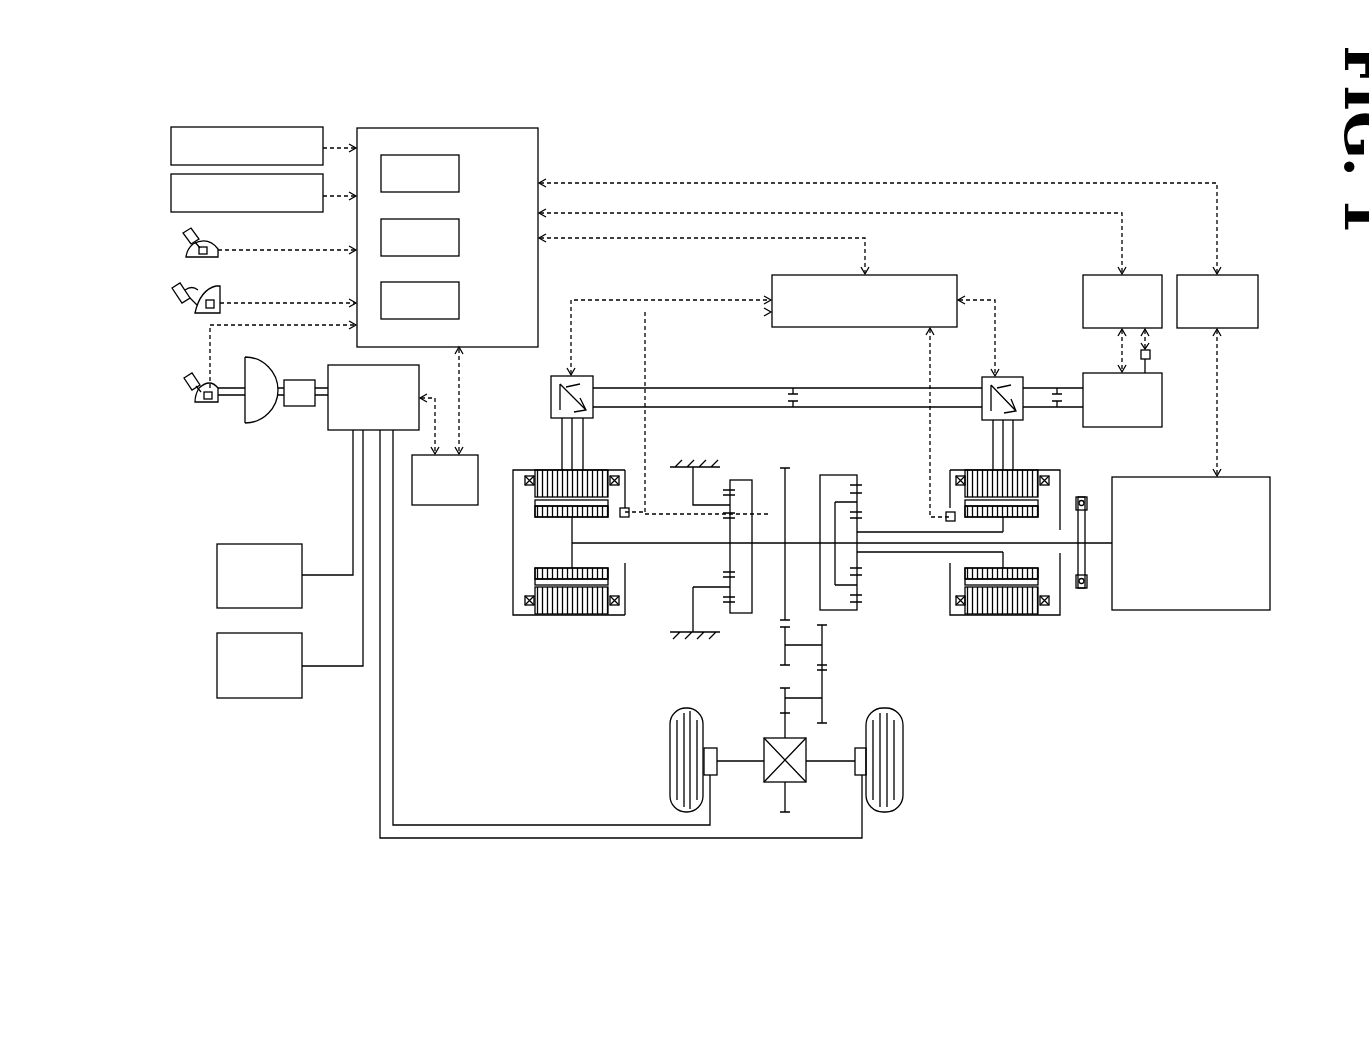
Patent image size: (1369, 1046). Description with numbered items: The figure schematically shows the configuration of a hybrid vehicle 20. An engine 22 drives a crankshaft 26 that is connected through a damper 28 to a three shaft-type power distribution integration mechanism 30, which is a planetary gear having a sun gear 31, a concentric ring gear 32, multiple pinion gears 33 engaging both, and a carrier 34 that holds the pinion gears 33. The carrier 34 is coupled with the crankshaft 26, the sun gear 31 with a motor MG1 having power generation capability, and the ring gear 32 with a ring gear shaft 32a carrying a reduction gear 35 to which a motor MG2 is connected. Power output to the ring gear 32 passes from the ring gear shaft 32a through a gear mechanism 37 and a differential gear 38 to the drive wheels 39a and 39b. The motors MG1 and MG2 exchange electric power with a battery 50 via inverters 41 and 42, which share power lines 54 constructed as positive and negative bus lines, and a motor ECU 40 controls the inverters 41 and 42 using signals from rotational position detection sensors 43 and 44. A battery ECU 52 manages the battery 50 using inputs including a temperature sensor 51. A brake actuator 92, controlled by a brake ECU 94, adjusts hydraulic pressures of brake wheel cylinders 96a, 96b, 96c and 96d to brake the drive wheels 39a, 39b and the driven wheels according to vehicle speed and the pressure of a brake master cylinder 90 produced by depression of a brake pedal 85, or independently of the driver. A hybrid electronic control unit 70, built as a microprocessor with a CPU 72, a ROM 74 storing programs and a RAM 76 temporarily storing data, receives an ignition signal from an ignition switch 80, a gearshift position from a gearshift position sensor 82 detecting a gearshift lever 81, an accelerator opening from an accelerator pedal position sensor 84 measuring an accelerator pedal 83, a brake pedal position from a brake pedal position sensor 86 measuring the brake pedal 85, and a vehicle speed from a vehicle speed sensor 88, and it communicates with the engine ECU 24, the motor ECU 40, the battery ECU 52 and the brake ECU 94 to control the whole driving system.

The hybrid vehicle 20 is at (1029, 156).
The engine 22 is at (1270, 512).
The engine ECU 24 is at (1240, 275).
The crankshaft 26 is at (1095, 545).
The damper 28 is at (1083, 590).
The power distribution integration mechanism 30 is at (911, 529).
The sun gear 31 is at (857, 557).
The ring gear 32 is at (857, 602).
The ring gear shaft 32a is at (770, 541).
The pinion gears 33 is at (857, 580).
The carrier 34 is at (832, 475).
The reduction gear 35 is at (736, 457).
The gear mechanism 37 is at (868, 684).
The differential gear 38 is at (806, 775).
The drive wheel 39a is at (670, 792).
The drive wheel 39b is at (903, 792).
The motor ECU 40 is at (902, 275).
The inverter 41 is at (1016, 377).
The inverter 42 is at (585, 376).
The rotational position detection sensor 43 is at (950, 512).
The rotational position detection sensor 44 is at (622, 506).
The battery 50 is at (1122, 427).
The temperature sensor 51 is at (1150, 355).
The battery ECU 52 is at (1083, 278).
The power lines 54 is at (847, 404).
The hybrid electronic control unit 70 is at (447, 128).
The CPU 72 is at (459, 173).
The ROM 74 is at (459, 238).
The RAM 76 is at (459, 301).
The ignition switch 80 is at (171, 141).
The gearshift lever 81 is at (184, 233).
The gearshift position sensor 82 is at (190, 249).
The accelerator pedal 83 is at (186, 288).
The accelerator pedal position sensor 84 is at (195, 303).
The brake pedal 85 is at (186, 378).
The brake pedal position sensor 86 is at (196, 398).
The vehicle speed sensor 88 is at (171, 189).
The brake master cylinder 90 is at (295, 380).
The brake actuator 92 is at (328, 425).
The brake ECU 94 is at (441, 505).
The brake wheel cylinder 96a is at (716, 748).
The brake wheel cylinder 96b is at (860, 748).
The brake wheel cylinder 96c is at (260, 544).
The brake wheel cylinder 96d is at (256, 698).
The motor MG1 is at (1003, 615).
The motor MG2 is at (548, 470).